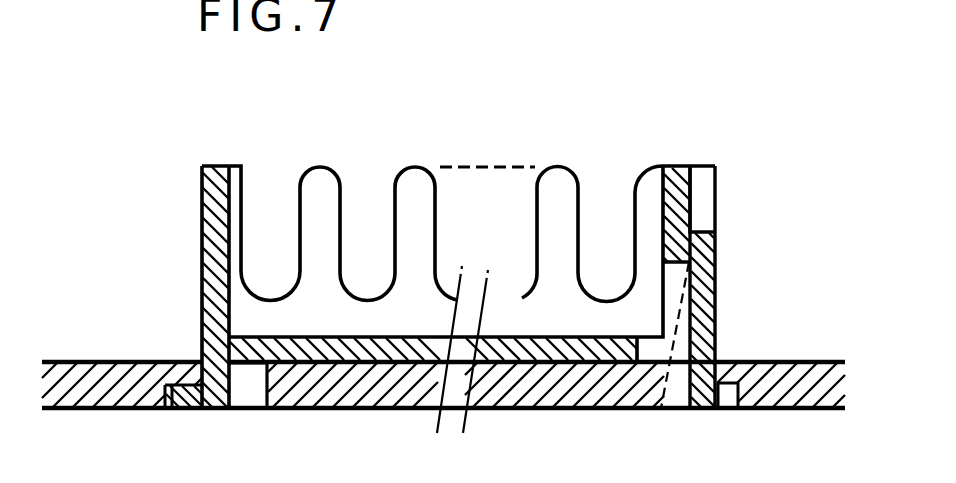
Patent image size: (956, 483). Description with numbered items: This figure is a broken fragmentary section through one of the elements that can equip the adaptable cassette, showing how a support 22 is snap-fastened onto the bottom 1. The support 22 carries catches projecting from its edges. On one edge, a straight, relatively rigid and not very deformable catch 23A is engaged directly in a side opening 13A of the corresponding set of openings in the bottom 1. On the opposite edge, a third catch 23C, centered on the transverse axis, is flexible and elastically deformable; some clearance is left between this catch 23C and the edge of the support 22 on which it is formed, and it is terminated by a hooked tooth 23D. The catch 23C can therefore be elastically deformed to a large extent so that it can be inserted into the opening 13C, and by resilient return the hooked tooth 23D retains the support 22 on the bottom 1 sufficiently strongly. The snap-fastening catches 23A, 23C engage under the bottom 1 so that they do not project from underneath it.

The bottom 1 is at (140, 372).
The side opening 13A is at (244, 396).
The opening 13C is at (681, 411).
The support 22 is at (702, 205).
The catch 23A is at (208, 397).
The catch 23C is at (703, 322).
The hooked tooth 23D is at (725, 410).